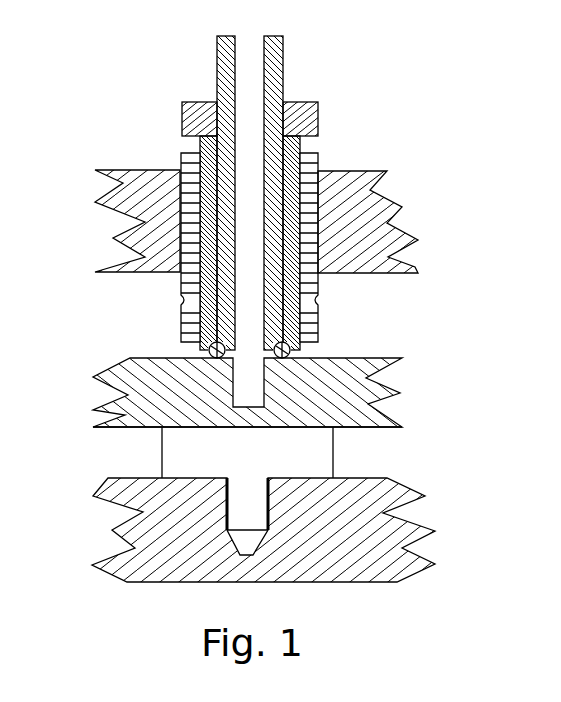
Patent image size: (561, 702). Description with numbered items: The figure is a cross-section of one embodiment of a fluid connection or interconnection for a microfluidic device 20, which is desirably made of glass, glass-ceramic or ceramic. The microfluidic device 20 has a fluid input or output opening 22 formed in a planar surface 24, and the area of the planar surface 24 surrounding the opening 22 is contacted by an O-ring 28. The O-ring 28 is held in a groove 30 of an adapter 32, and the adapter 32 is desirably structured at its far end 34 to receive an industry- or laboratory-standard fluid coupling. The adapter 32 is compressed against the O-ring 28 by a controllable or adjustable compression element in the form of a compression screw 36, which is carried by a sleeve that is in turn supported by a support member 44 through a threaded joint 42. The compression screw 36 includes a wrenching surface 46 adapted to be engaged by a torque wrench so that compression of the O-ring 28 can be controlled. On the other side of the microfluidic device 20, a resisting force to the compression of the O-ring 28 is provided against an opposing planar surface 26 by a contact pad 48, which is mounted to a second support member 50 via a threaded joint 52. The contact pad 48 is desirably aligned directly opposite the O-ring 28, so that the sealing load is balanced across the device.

The microfluidic device 20 is at (373, 358).
The fluid input or output opening 22 is at (248, 387).
The planar surface 24 is at (147, 358).
The opposing planar surface 26 is at (128, 428).
The O-ring 28 is at (287, 347).
The groove 30 is at (276, 342).
The adapter 32 is at (277, 72).
The far end 34 is at (160, 64).
The compression screw 36 is at (300, 147).
The threaded joint 42 is at (181, 240).
The support member 44 is at (150, 172).
The wrenching surface 46 is at (320, 118).
The contact pad 48 is at (313, 458).
The second support member 50 is at (385, 563).
The threaded joint 52 is at (270, 502).